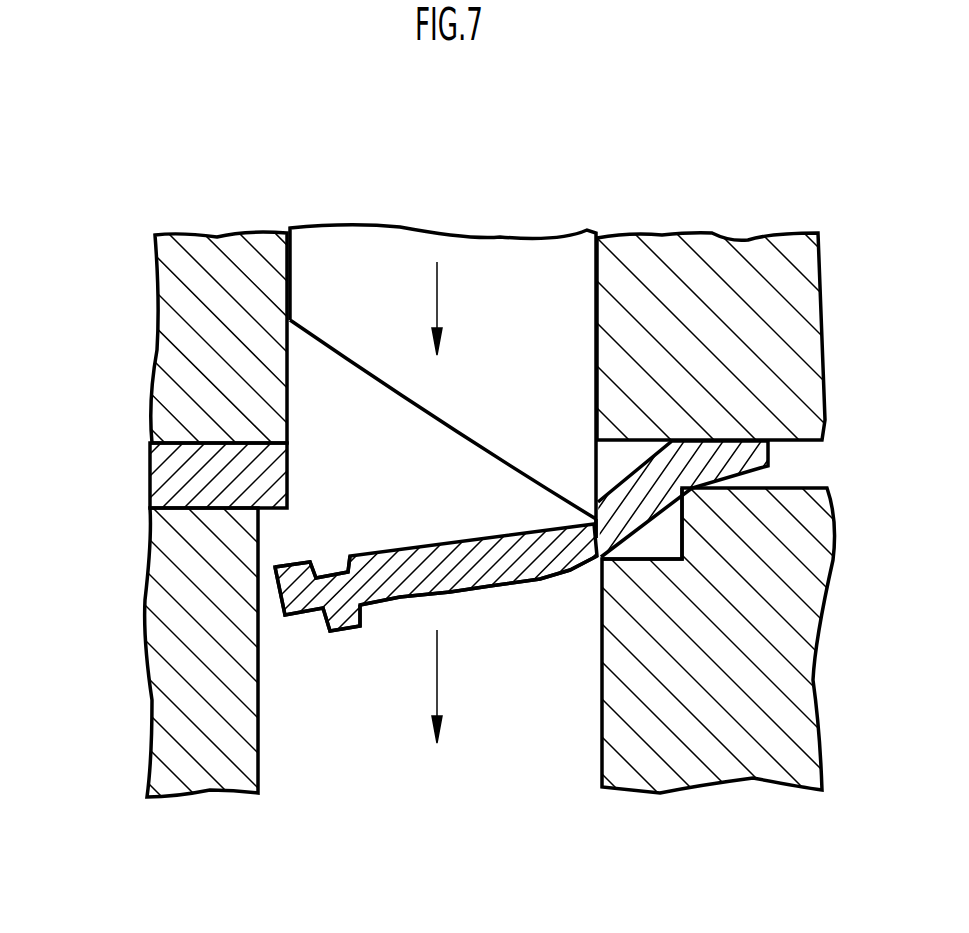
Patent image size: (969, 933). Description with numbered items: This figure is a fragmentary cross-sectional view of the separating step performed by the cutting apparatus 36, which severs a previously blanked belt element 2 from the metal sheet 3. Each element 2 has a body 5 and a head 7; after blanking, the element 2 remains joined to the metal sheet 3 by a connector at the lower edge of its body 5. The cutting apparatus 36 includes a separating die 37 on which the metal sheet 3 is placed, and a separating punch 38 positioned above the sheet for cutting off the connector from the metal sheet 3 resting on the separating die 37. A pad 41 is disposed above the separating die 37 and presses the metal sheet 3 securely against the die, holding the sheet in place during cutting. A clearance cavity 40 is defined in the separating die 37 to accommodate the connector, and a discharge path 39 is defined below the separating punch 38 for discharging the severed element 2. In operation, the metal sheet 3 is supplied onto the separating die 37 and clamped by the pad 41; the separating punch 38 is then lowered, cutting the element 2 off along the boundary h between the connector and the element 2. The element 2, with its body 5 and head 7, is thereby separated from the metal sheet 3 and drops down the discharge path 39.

The element 2 is at (495, 587).
The metal sheet 3 is at (148, 485).
The body 5 is at (505, 528).
The head 7 is at (300, 566).
The boundary h is at (595, 548).
The cutting apparatus 36 is at (788, 138).
The separating die 37 is at (160, 640).
The separating punch 38 is at (503, 287).
The discharge path 39 is at (327, 773).
The clearance cavity 40 is at (640, 559).
The pad 41 is at (170, 353).